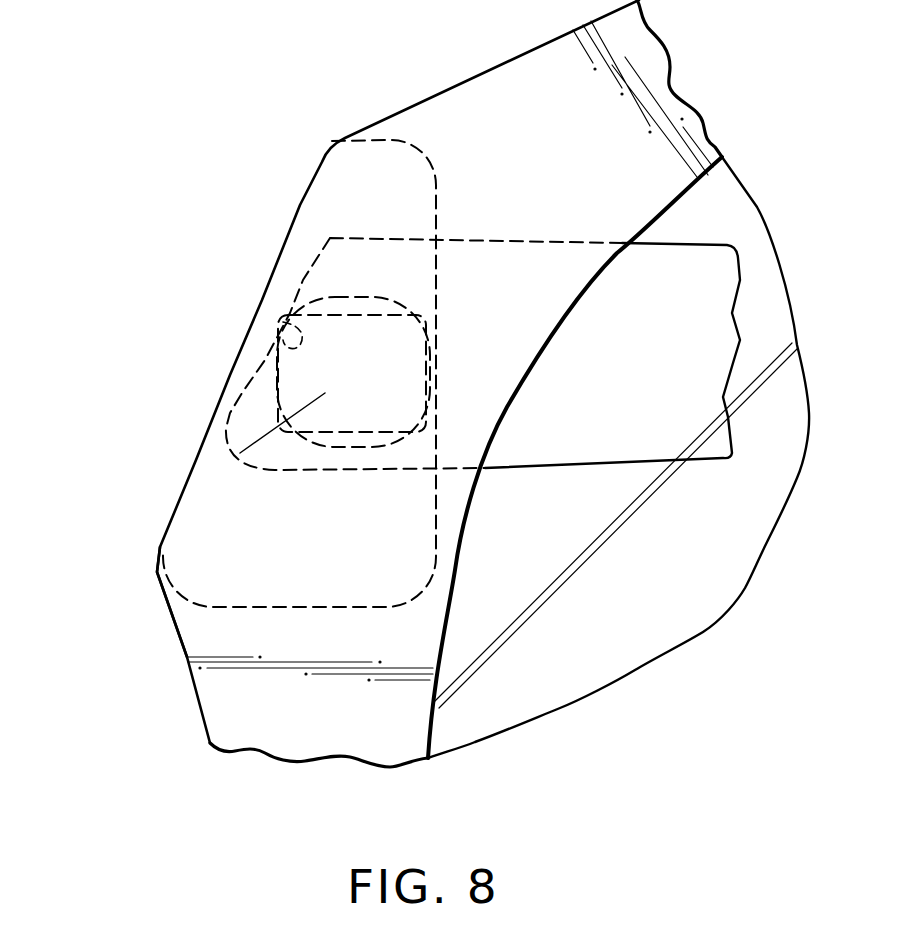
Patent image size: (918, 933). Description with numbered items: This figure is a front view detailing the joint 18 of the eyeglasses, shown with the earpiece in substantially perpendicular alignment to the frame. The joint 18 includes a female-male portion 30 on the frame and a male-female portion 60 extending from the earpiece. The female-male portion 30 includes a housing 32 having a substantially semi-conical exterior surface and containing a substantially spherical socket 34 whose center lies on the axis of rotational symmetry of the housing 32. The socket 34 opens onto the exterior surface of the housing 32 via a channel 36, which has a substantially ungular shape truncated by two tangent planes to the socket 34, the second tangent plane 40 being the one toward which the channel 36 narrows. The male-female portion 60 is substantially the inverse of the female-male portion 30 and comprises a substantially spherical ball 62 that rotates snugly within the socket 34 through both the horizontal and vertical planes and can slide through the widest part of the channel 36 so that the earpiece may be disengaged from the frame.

The joint 18 is at (286, 113).
The female-male portion 30 is at (166, 433).
The housing 32 is at (157, 573).
The socket 34 is at (283, 322).
The channel 36 is at (330, 238).
The second tangent plane 40 is at (277, 379).
The male-female portion 60 is at (504, 489).
The ball 62 is at (240, 453).